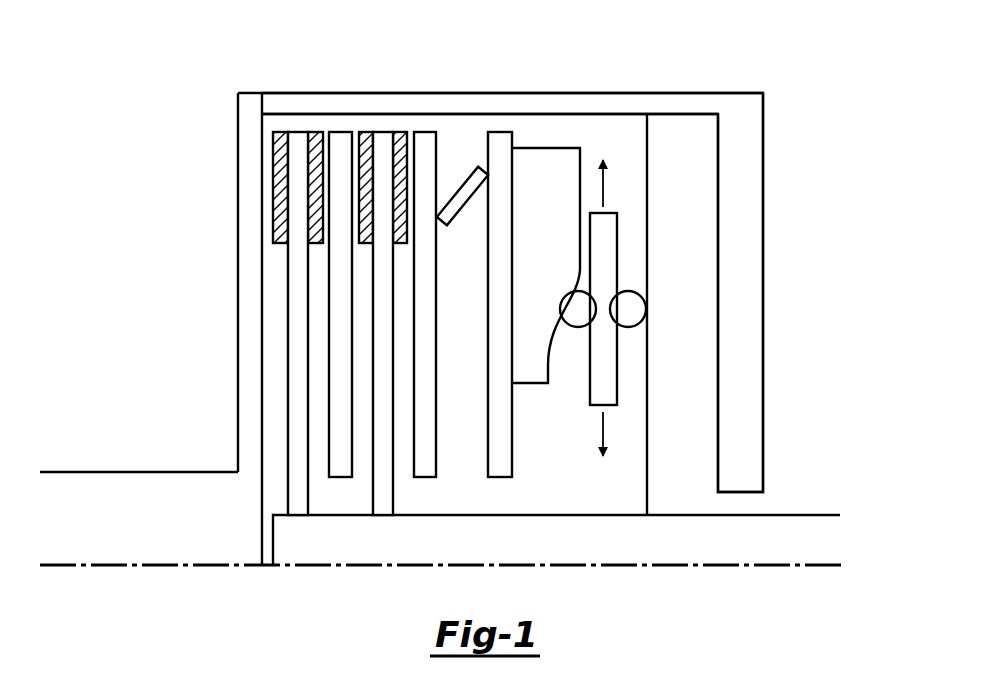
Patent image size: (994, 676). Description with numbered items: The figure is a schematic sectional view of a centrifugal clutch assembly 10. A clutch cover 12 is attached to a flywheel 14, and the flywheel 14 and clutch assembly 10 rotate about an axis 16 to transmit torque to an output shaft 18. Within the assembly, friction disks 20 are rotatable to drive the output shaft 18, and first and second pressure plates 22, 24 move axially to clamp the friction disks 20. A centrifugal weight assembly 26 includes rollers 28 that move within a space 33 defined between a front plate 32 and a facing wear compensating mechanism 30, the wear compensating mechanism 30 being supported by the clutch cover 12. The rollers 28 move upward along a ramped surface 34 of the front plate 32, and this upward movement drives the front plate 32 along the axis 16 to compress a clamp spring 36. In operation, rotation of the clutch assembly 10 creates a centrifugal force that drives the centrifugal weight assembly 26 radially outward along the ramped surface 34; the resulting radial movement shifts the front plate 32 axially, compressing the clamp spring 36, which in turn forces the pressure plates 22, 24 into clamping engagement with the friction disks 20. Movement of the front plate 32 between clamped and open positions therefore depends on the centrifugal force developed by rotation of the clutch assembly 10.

The centrifugal clutch assembly 10 is at (770, 60).
The clutch cover 12 is at (758, 263).
The flywheel 14 is at (239, 411).
The axis 16 is at (703, 567).
The output shaft 18 is at (808, 515).
The friction disks 20 is at (383, 124).
The first pressure plate 22 is at (427, 130).
The second pressure plate 24 is at (595, 95).
The centrifugal weight assembly 26 is at (612, 396).
The rollers 28 is at (617, 305).
The wear compensating mechanism 30 is at (692, 222).
The front plate 32 is at (498, 478).
The space 33 is at (636, 151).
The ramped surface 34 is at (563, 384).
The clamp spring 36 is at (458, 192).